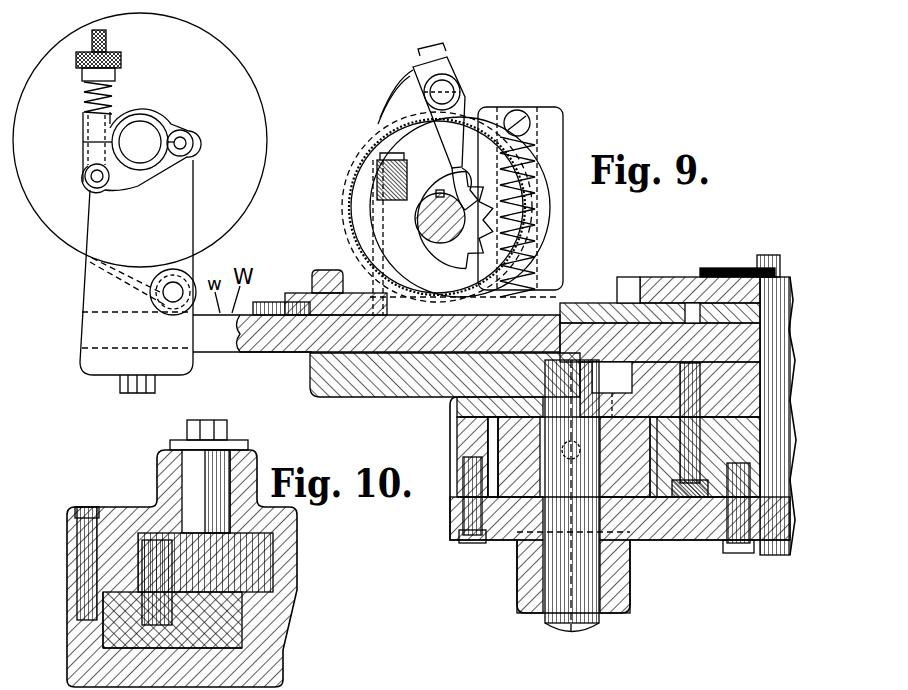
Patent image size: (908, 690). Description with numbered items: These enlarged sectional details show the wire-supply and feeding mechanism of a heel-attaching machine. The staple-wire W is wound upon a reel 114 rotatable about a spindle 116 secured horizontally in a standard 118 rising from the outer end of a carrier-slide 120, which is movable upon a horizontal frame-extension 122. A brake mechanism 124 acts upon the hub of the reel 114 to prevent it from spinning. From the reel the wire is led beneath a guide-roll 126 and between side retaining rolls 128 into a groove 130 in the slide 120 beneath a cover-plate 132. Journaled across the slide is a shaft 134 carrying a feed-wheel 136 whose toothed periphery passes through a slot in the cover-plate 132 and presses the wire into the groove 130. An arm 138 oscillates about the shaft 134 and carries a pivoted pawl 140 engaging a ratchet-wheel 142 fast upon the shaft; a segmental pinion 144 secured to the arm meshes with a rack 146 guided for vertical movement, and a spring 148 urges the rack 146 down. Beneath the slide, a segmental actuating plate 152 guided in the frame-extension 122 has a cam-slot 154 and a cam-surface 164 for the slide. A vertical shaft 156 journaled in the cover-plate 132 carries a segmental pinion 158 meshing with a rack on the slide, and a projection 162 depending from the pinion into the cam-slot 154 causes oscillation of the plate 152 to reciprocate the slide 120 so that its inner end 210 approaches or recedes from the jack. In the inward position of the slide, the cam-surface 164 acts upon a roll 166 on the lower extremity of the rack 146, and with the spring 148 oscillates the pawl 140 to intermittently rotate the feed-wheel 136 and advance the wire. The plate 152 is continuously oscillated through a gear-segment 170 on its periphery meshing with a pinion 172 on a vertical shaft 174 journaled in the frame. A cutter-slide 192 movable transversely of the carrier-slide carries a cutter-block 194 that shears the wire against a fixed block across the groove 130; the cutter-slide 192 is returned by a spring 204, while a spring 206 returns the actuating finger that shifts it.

In FIG. 9, the reel 114 is at (239, 66).
In FIG. 9, the spindle 116 is at (150, 132).
In FIG. 9, the standard 118 is at (90, 285).
In FIG. 9, the carrier-slide 120 is at (221, 348).
In FIG. 9, the frame-extension 122 is at (366, 384).
In FIG. 10, the frame-extension 122 is at (275, 670).
In FIG. 9, the brake mechanism 124 is at (83, 130).
In FIG. 9, the guide-roll 126 is at (173, 271).
In FIG. 9, the side retaining rolls 128 is at (269, 302).
In FIG. 9, the groove 130 is at (311, 354).
In FIG. 9, the cover-plate 132 is at (632, 280).
In FIG. 10, the cover-plate 132 is at (296, 545).
In FIG. 9, the shaft 134 is at (420, 223).
In FIG. 9, the feed-wheel 136 is at (352, 212).
In FIG. 9, the arm 138 is at (452, 130).
In FIG. 9, the pawl 140 is at (380, 125).
In FIG. 9, the ratchet-wheel 142 is at (350, 190).
In FIG. 9, the segmental pinion 144 is at (492, 216).
In FIG. 9, the rack 146 is at (500, 229).
In FIG. 9, the spring 148 is at (530, 170).
In FIG. 9, the segmental actuating plate 152 is at (690, 440).
In FIG. 10, the segmental actuating plate 152 is at (234, 630).
In FIG. 9, the cam-slot 154 is at (613, 395).
In FIG. 10, the vertical shaft 156 is at (188, 495).
In FIG. 10, the segmental pinion 158 is at (268, 573).
In FIG. 10, the projection 162 is at (90, 632).
In FIG. 9, the cam-surface 164 is at (742, 538).
In FIG. 9, the roll 166 is at (490, 430).
In FIG. 9, the gear-segment 170 is at (657, 417).
In FIG. 9, the pinion 172 is at (508, 443).
In FIG. 9, the vertical shaft 174 is at (552, 622).
In FIG. 9, the cutter-slide 192 is at (612, 377).
In FIG. 9, the cutter-block 194 is at (681, 303).
In FIG. 9, the spring 204 is at (613, 290).
In FIG. 9, the spring 206 is at (736, 268).
In FIG. 9, the inner end 210 is at (792, 298).